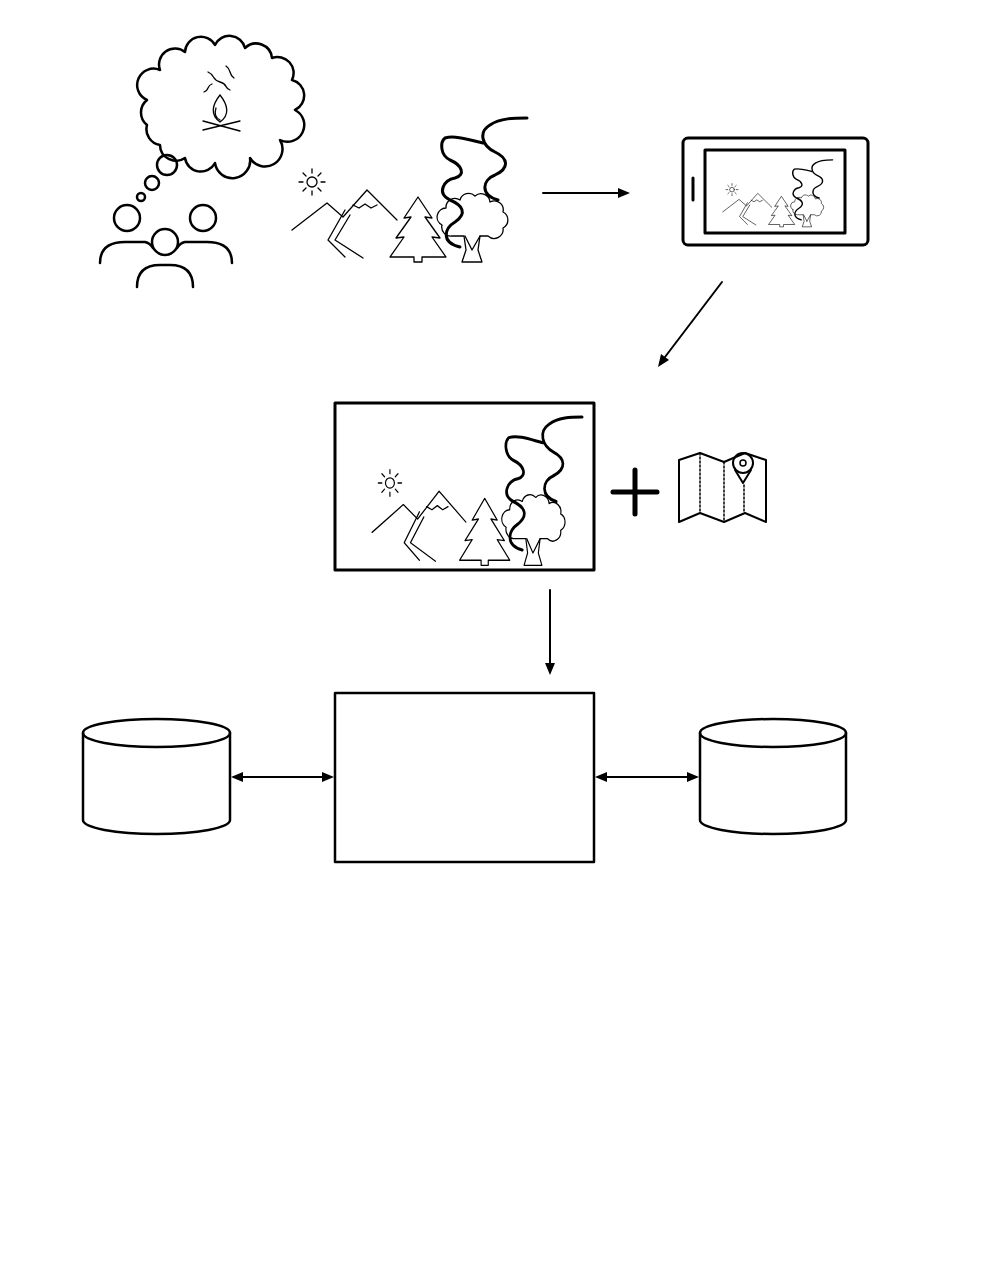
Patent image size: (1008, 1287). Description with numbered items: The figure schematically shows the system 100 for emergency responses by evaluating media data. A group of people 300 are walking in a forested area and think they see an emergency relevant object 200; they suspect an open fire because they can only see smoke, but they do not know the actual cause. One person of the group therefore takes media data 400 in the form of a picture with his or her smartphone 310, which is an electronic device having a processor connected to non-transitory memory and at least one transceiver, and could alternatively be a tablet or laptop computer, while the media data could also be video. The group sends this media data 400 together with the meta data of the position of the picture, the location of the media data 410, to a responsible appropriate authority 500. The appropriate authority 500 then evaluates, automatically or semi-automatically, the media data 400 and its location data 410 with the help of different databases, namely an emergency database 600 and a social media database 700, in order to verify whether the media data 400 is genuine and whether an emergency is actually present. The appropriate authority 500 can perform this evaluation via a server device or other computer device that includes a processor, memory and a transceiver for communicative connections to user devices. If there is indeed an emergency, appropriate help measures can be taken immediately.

The system 100 is at (218, 1076).
The emergency relevant object 200 is at (546, 114).
The person/eyewitness 300 is at (82, 244).
The electronic device 310 is at (851, 126).
The media data 400 is at (325, 489).
The location of the media data 410 is at (782, 475).
The appropriate authority 500 is at (460, 871).
The emergency database 600 is at (767, 840).
The social media database 700 is at (148, 838).